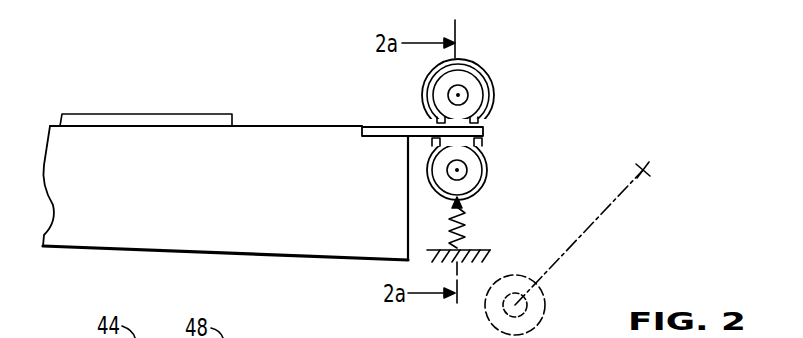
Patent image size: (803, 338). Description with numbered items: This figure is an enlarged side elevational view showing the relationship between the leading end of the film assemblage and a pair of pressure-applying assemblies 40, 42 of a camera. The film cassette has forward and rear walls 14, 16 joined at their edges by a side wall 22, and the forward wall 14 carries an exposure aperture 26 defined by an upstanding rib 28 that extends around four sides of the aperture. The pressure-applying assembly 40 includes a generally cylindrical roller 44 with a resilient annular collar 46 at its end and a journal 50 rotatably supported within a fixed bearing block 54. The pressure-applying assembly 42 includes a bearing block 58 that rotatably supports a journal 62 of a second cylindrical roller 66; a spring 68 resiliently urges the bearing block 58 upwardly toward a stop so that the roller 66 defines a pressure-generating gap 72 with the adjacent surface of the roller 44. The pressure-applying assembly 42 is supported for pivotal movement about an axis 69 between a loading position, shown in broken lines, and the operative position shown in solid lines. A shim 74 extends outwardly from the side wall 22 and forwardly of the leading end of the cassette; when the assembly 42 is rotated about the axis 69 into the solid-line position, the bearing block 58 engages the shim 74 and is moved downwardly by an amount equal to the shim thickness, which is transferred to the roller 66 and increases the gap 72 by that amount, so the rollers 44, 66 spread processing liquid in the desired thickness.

The forward wall 14 is at (309, 125).
The rear wall 16 is at (235, 259).
The side wall 22 is at (197, 198).
The exposure aperture 26 is at (82, 97).
The upstanding rib 28 is at (203, 114).
The pressure-applying assembly 40 is at (505, 99).
The pressure-applying assembly 42 is at (500, 171).
The roller 44 is at (497, 91).
The annular collar 46 is at (492, 105).
The journal 50 is at (462, 95).
The bearing block 54 is at (462, 82).
The bearing block 58 is at (464, 190).
The journal 62 is at (460, 208).
The roller 66 is at (487, 176).
The spring 68 is at (447, 229).
The axis 69 is at (648, 168).
The pressure-generating gap 72 is at (496, 121).
The shim 74 is at (483, 147).